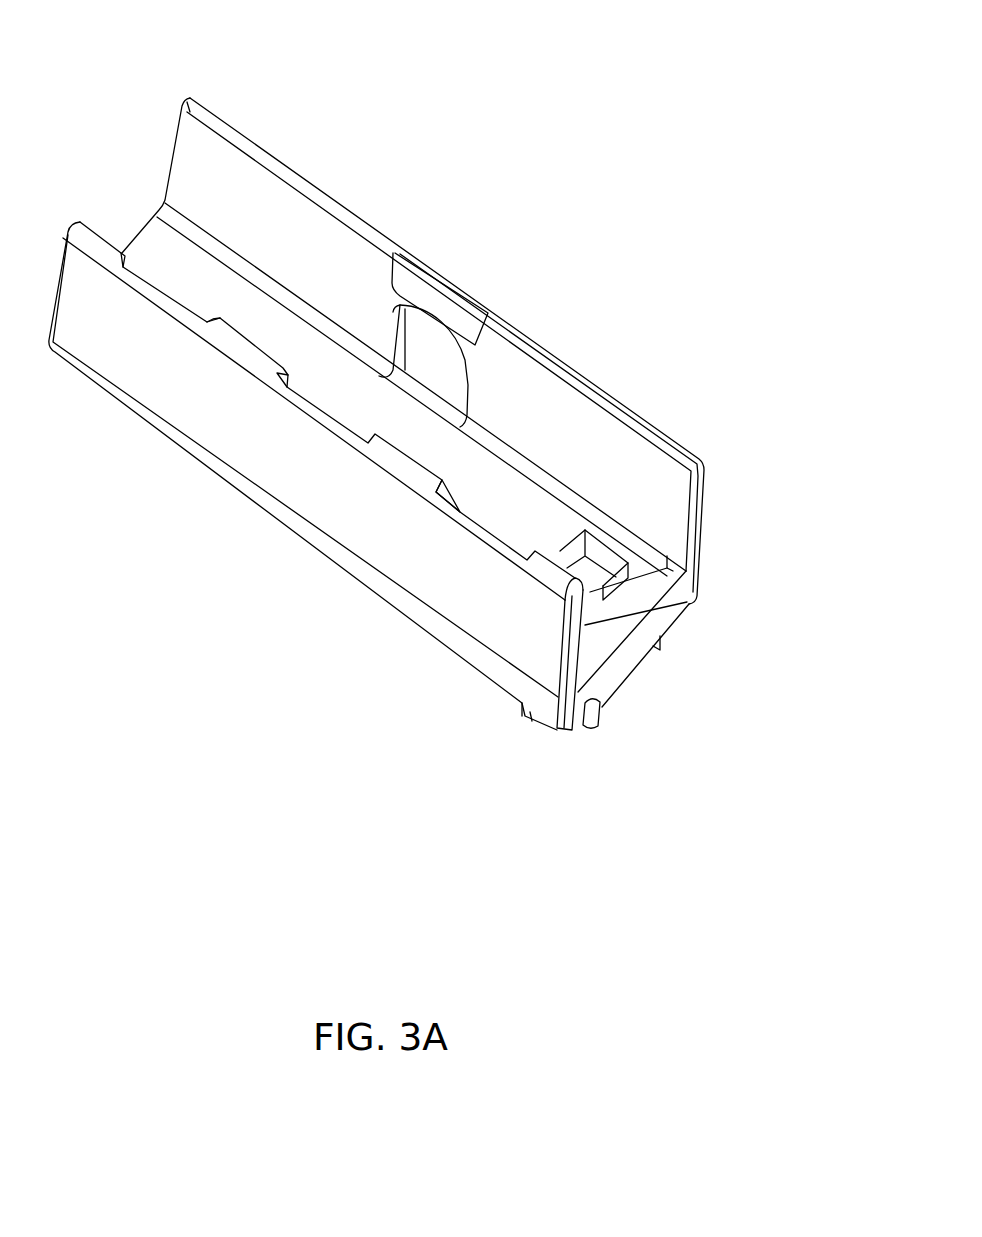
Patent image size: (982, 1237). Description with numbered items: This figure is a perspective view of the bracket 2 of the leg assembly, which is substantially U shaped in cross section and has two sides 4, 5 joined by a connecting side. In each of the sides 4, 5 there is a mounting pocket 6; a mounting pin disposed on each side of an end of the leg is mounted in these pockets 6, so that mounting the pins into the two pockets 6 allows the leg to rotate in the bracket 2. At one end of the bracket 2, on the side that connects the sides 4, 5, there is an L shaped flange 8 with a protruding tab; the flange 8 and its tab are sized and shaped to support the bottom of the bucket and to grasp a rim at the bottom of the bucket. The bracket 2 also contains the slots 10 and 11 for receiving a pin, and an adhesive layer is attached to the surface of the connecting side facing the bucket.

The bracket 2 is at (211, 107).
The side 4 is at (607, 435).
The side 5 is at (325, 478).
The mounting pocket 6 is at (432, 352).
The L shaped flange 8 is at (605, 708).
The slot 10 is at (490, 542).
The slot 11 is at (165, 307).